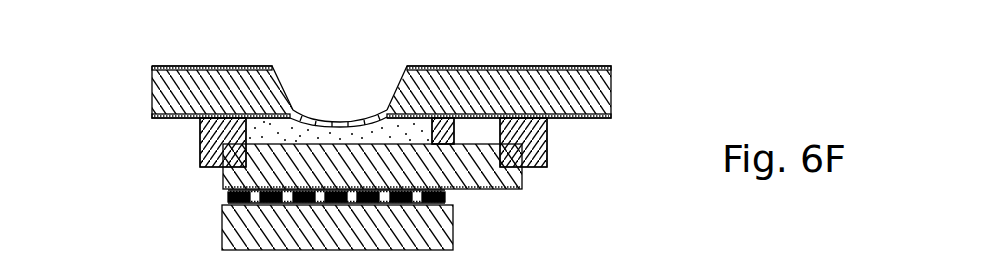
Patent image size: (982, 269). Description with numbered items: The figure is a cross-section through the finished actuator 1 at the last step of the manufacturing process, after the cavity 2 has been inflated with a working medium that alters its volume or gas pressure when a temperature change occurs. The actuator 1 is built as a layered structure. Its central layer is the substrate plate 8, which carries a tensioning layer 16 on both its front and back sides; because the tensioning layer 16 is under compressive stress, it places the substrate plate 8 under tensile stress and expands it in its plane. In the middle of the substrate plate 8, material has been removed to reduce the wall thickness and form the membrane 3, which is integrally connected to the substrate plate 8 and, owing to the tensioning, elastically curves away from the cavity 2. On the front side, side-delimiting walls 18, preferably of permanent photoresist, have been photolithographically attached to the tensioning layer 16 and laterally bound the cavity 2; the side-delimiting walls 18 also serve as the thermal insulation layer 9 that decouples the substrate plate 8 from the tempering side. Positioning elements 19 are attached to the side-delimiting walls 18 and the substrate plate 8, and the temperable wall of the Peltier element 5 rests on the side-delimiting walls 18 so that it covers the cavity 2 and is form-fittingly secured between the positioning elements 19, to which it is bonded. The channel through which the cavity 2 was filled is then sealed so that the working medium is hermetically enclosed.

The actuator 1 is at (706, 91).
The cavity 2 is at (312, 138).
The membrane 3 is at (341, 118).
The Peltier element 5 is at (495, 213).
The substrate plate 8 is at (610, 100).
The thermal insulation layer 9 is at (207, 145).
The tensioning layer 16 is at (182, 72).
The side-delimiting walls 18 is at (373, 142).
The positioning elements 19 is at (545, 158).